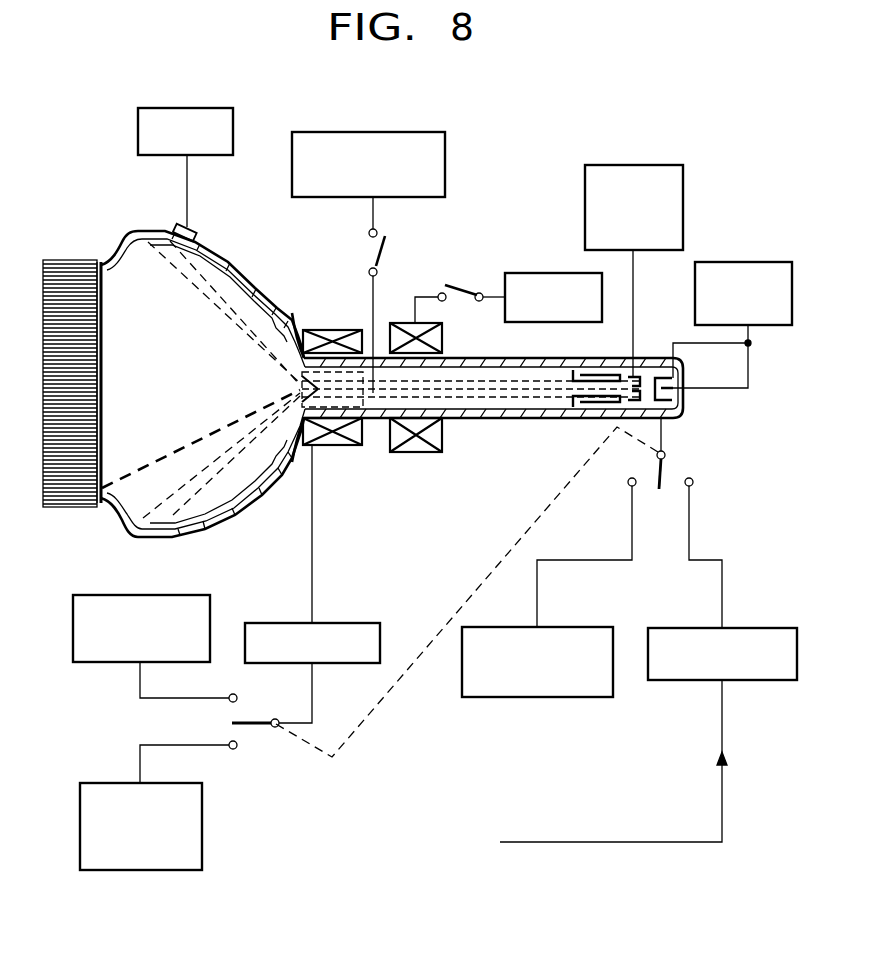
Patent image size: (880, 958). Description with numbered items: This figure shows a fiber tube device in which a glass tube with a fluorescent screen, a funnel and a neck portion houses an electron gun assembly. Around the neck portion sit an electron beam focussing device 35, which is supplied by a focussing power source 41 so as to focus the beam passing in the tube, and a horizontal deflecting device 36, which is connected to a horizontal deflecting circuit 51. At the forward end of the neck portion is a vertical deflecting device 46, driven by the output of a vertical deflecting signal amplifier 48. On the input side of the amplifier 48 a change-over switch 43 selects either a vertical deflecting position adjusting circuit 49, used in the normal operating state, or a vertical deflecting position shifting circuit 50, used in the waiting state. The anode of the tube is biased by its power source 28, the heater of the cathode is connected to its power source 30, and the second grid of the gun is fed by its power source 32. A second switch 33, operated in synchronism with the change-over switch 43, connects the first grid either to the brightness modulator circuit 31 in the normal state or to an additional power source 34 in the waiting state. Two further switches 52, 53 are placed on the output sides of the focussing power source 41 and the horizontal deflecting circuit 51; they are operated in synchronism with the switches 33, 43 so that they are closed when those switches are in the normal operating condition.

The power source 28 is at (237, 115).
The heater power source 30 is at (795, 293).
The brightness modulator circuit 31 is at (752, 682).
The second grid power source 32 is at (686, 203).
The second switch 33 is at (668, 482).
The additional power source 34 is at (549, 697).
The electron beam focussing device 35 is at (428, 453).
The horizontal deflecting device 36 is at (298, 383).
The focussing power source 41 is at (543, 273).
The change-over switch 43 is at (245, 730).
The vertical deflecting device 46 is at (338, 446).
The vertical deflecting signal amplifier 48 is at (352, 665).
The vertical deflecting position adjusting circuit 49 is at (100, 663).
The vertical deflecting position shifting circuit 50 is at (100, 871).
The horizontal deflecting circuit 51 is at (448, 165).
The switch 52 is at (458, 285).
The switch 53 is at (370, 245).